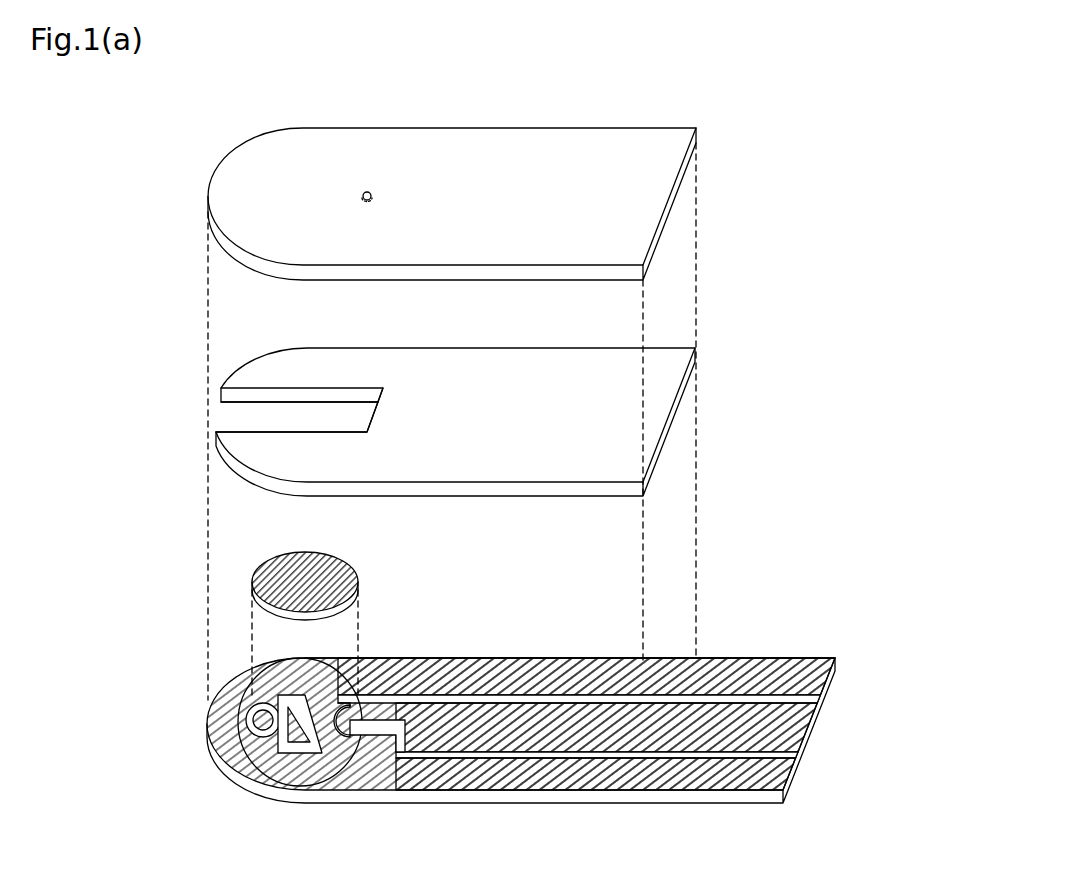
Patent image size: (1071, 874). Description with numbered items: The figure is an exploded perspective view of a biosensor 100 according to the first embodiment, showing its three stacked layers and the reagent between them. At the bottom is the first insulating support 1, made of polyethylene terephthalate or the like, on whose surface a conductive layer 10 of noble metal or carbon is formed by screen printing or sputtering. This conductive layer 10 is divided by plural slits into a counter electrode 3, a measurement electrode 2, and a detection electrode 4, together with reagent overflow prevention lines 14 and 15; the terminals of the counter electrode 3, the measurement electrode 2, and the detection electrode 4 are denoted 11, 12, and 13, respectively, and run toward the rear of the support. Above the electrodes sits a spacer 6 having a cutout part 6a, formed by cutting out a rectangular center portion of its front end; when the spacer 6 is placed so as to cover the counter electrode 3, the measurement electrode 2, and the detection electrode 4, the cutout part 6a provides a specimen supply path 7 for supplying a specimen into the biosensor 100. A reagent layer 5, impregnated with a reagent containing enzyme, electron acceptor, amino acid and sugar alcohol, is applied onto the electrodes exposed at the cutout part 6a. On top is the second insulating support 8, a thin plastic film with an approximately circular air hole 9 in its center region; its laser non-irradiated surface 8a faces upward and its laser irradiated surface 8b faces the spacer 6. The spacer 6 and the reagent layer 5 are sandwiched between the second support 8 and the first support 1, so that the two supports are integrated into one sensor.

The biosensor 100 is at (858, 275).
The first insulating support 1 is at (746, 801).
The measurement electrode 2 is at (303, 738).
The counter electrode 3 is at (216, 736).
The detection electrode 4 is at (372, 716).
The reagent layer 5 is at (336, 575).
The spacer 6 is at (660, 386).
The cutout part 6a is at (352, 388).
The specimen supply path 7 is at (245, 418).
The second insulating support 8 is at (655, 184).
The laser non-irradiated surface 8a is at (615, 150).
The laser irradiated surface 8b is at (592, 285).
The air hole 9 is at (368, 191).
The conductive layer 10 is at (780, 659).
The terminal of the counter electrode 11 is at (815, 681).
The terminal of the measurement electrode 12 is at (780, 776).
The terminal of the detection electrode 13 is at (800, 726).
The reagent overflow prevention line 14 is at (253, 732).
The reagent overflow prevention line 15 is at (350, 733).